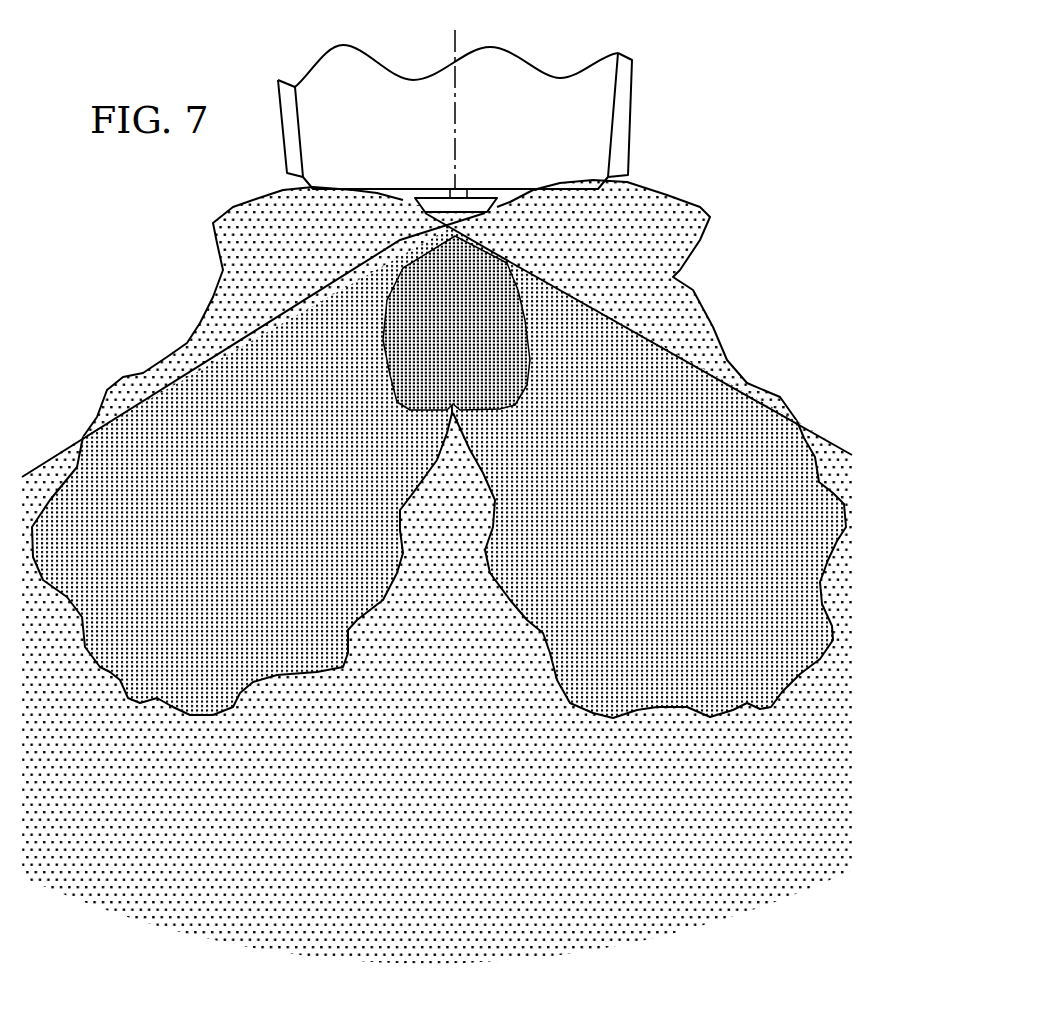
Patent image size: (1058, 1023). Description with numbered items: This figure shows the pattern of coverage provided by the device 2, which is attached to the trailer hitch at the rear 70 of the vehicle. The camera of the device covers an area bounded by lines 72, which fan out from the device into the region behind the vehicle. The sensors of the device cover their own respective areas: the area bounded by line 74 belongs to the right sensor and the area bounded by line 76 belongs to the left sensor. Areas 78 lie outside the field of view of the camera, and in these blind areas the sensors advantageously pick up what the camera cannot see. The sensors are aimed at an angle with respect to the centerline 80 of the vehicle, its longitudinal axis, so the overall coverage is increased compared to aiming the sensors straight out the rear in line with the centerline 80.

The device 2 is at (481, 195).
The rear of the vehicle 70 is at (627, 103).
The lines 72 is at (205, 353).
The line 74 is at (775, 710).
The line 76 is at (104, 674).
The areas 78 is at (308, 250).
The centerline 80 is at (455, 112).